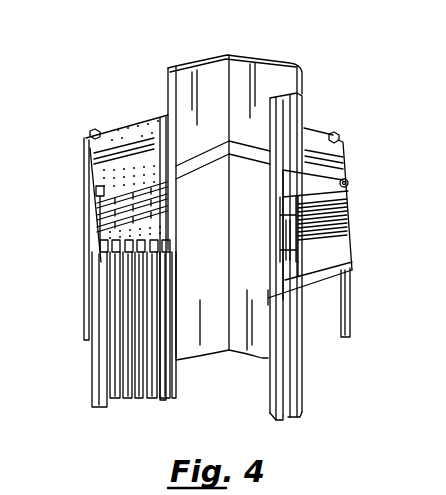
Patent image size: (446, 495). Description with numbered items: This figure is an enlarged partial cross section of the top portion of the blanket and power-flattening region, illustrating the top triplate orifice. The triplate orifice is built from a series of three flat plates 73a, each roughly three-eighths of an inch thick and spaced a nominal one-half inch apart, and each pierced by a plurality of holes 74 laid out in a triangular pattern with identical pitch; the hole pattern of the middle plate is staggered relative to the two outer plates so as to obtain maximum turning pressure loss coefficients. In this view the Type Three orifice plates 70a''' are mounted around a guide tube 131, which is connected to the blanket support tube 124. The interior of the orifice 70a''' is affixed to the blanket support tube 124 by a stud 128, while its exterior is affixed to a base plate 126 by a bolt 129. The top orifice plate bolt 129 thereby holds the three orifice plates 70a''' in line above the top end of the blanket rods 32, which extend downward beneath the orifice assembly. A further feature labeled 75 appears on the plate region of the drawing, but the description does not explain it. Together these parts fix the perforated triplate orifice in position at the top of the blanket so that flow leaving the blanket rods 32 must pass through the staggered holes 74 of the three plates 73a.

The blanket support tube 124 is at (263, 74).
The guide tube 131 is at (210, 335).
The holes 74 is at (130, 133).
The perforated plate 75 is at (140, 128).
The Type 3 orifice plates 70a''' is at (334, 242).
The stud 128 is at (345, 162).
The base plate 126 is at (293, 267).
The bolt 129 is at (88, 187).
The flat plates 73a is at (100, 220).
The blanket rods 32 is at (97, 363).